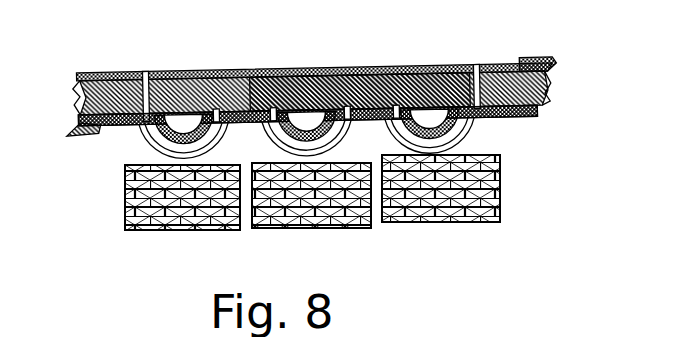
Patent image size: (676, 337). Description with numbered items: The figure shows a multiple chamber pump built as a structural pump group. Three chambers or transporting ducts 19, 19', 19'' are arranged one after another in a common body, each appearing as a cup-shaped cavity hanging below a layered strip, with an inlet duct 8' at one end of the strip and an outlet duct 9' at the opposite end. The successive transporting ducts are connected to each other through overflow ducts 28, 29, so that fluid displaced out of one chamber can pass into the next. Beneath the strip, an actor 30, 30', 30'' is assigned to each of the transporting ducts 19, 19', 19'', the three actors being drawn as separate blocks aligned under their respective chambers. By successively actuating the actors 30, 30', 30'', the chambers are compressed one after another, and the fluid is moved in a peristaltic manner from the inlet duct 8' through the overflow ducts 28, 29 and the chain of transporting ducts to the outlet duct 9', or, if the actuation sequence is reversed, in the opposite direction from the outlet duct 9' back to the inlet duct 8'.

The inlet duct 8' is at (309, 78).
The outlet duct 9' is at (549, 42).
The chamber or transporting duct 19 is at (184, 88).
The chamber or transporting duct 19' is at (307, 87).
The chamber or transporting duct 19'' is at (430, 85).
The overflow duct 28 is at (236, 108).
The overflow duct 29 is at (367, 86).
The actor 30 is at (182, 219).
The actor 30' is at (320, 215).
The actor 30'' is at (478, 201).